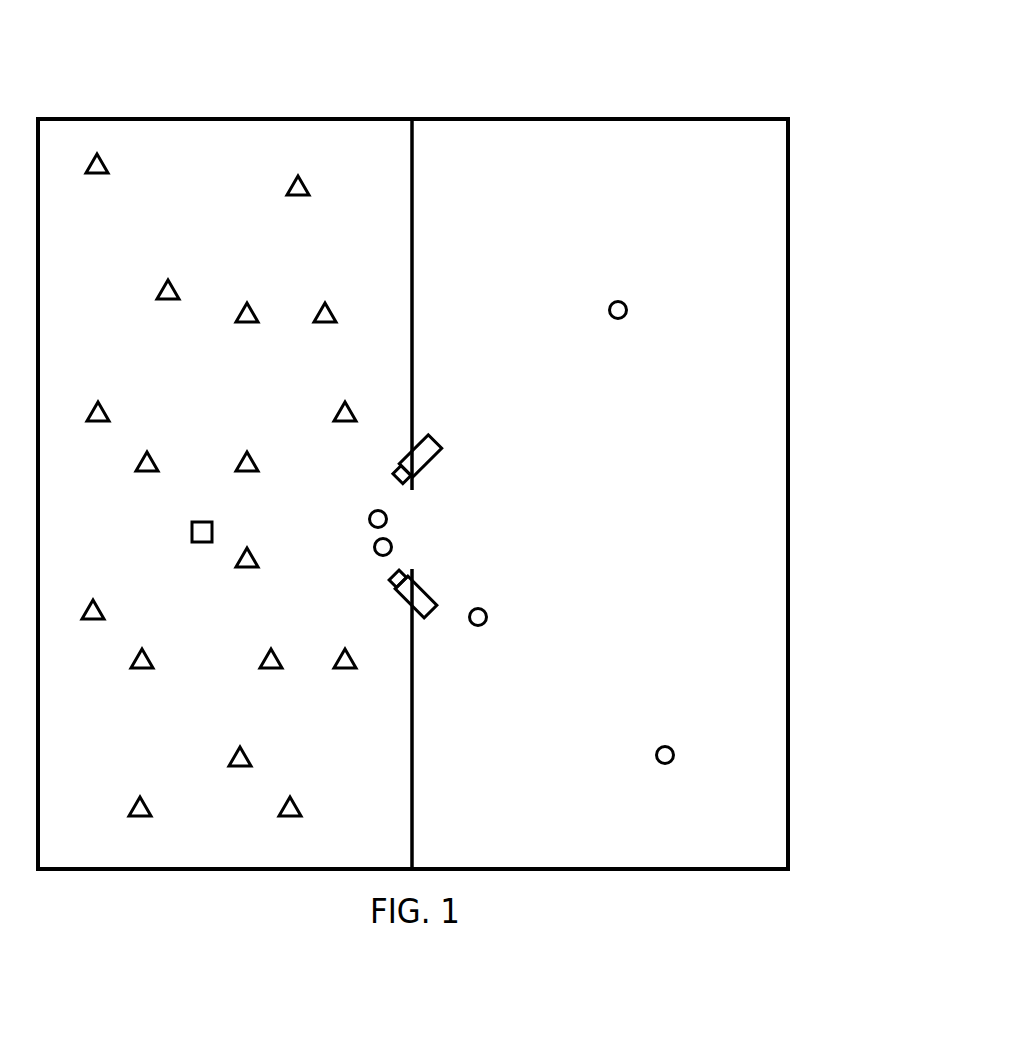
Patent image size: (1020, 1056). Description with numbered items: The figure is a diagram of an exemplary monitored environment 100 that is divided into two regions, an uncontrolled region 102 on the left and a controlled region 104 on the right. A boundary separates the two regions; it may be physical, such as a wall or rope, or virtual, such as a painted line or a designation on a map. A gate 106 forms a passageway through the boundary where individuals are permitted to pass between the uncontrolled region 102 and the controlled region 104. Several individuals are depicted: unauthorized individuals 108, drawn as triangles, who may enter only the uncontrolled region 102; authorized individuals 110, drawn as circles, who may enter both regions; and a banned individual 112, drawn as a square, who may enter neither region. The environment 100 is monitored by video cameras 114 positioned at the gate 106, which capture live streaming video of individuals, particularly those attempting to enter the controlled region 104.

The monitored environment 100 is at (788, 154).
The uncontrolled region 102 is at (221, 118).
The controlled region 104 is at (596, 118).
The gate 106 is at (412, 500).
The unauthorized individual 108 is at (290, 190).
The authorized individual 110 is at (608, 312).
The banned individual 112 is at (192, 532).
The video camera 114 is at (441, 447).